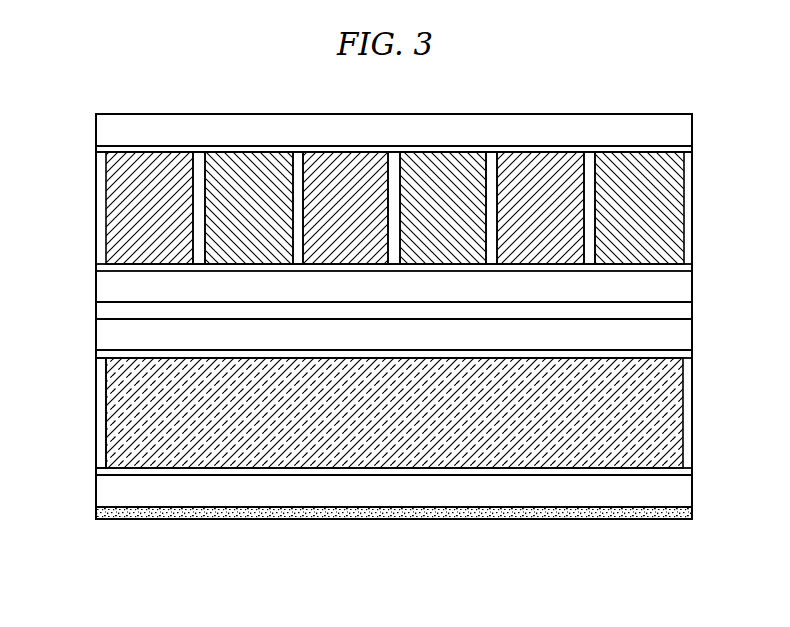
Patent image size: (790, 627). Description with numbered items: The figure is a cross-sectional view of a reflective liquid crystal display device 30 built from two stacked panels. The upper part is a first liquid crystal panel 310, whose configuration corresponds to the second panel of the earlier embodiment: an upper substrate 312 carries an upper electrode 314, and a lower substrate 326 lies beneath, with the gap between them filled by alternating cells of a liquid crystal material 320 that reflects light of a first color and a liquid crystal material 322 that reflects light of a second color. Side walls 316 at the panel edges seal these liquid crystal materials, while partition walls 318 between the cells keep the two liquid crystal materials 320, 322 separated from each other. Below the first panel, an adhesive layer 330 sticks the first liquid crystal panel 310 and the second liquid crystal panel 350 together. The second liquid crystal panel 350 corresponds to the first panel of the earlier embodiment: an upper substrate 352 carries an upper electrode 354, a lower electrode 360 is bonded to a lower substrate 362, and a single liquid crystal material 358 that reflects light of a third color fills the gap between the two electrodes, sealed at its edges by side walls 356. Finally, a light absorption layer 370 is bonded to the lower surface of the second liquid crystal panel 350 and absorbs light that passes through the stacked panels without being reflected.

The reflective liquid crystal display device 30 is at (398, 605).
The first liquid crystal panel 310 is at (77, 113).
The upper substrate 312 is at (683, 133).
The upper electrode 314 is at (684, 150).
The side walls 316 is at (688, 224).
The partition walls 318 is at (591, 170).
The liquid crystal material 320 is at (651, 180).
The liquid crystal material 322 is at (522, 177).
The lower substrate 326 is at (688, 289).
The adhesive layer 330 is at (107, 310).
The second liquid crystal panel 350 is at (76, 320).
The upper substrate 352 is at (683, 332).
The upper electrode 354 is at (683, 356).
The side walls 356 is at (102, 440).
The liquid crystal material 358 is at (447, 445).
The lower electrode 360 is at (683, 475).
The lower substrate 362 is at (683, 497).
The light absorption layer 370 is at (683, 514).